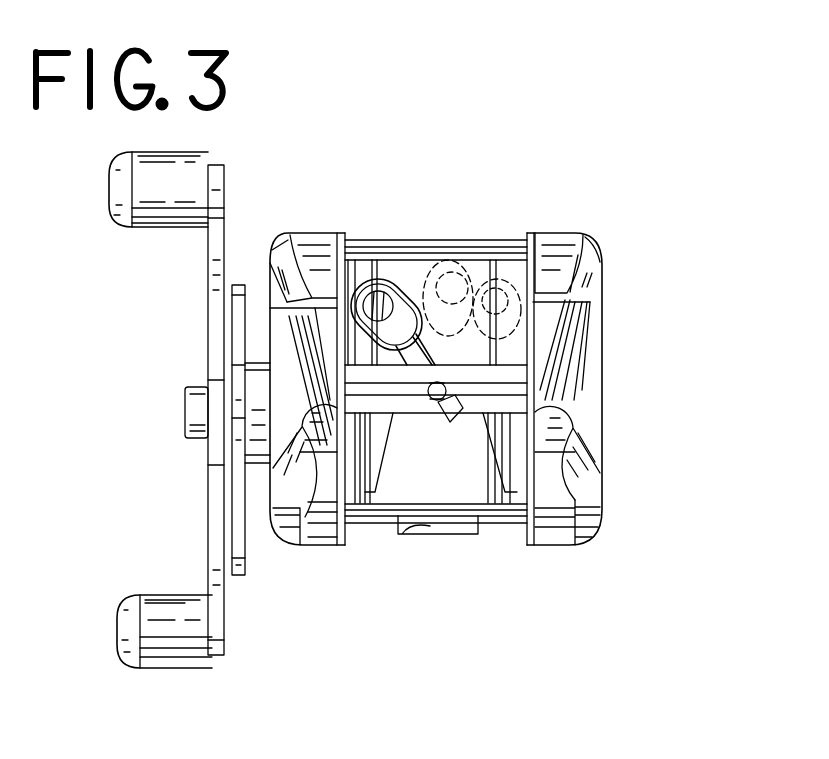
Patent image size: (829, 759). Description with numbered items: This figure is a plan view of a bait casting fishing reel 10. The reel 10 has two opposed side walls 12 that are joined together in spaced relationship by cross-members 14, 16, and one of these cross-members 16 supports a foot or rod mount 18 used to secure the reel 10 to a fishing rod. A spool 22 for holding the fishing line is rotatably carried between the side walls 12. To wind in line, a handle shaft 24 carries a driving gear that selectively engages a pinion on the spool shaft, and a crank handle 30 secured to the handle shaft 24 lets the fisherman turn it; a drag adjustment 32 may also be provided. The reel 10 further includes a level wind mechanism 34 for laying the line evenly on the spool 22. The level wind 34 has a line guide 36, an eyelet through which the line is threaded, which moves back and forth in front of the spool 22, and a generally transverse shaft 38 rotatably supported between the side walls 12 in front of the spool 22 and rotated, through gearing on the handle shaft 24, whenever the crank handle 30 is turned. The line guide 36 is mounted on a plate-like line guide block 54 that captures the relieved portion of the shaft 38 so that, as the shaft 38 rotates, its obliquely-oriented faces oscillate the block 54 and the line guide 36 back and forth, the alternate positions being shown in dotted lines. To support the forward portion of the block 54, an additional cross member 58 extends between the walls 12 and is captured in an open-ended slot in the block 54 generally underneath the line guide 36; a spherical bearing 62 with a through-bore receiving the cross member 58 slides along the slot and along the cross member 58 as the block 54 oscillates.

The bait casting fishing reel 10 is at (705, 186).
The side walls 12 is at (336, 240).
The cross-member 14 is at (452, 292).
The cross-member 16 is at (505, 525).
The foot or rod mount 18 is at (425, 525).
The spool 22 is at (493, 438).
The handle shaft 24 is at (192, 408).
The crank handle 30 is at (208, 288).
The drag adjustment 32 is at (248, 552).
The level wind mechanism 34 is at (459, 283).
The line guide 36 is at (387, 282).
The transverse shaft 38 is at (395, 402).
The line guide block 54 is at (412, 358).
The cross member 58 is at (490, 388).
The spherical bearing 62 is at (433, 402).